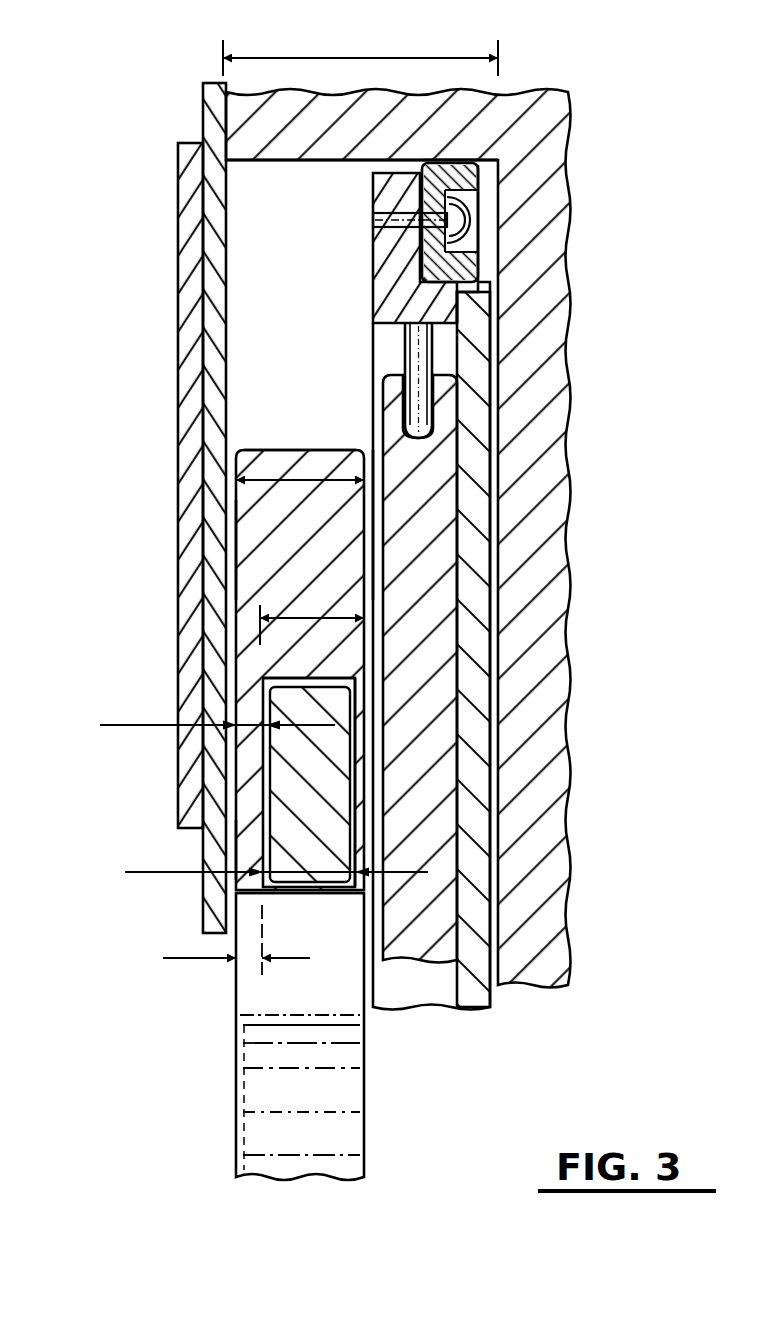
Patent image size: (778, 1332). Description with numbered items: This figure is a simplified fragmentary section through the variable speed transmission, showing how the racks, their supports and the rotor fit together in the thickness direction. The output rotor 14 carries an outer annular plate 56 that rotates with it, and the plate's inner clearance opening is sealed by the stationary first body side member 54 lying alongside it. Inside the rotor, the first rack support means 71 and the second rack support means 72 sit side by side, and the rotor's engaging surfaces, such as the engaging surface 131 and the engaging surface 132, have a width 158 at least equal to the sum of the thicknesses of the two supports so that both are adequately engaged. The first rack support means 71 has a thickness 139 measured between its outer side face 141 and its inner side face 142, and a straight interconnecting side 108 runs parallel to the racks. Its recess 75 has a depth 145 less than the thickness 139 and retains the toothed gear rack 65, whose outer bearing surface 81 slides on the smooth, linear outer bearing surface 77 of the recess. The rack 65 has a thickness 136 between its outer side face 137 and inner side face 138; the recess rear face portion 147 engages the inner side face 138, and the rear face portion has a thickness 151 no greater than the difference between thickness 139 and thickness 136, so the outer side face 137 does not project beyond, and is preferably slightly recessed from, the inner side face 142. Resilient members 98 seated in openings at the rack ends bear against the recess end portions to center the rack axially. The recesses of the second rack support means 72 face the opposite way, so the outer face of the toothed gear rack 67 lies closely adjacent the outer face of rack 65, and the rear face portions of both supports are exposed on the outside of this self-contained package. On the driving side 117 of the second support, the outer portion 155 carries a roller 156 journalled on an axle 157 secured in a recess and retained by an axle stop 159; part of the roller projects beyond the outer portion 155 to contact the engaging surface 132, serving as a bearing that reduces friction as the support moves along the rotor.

The output rotor 14 is at (558, 280).
The first body side member 54 is at (176, 183).
The outer annular plate 56 is at (200, 110).
The toothed gear rack 65 is at (340, 895).
The toothed gear rack 67 is at (424, 566).
The first rack support means 71 is at (262, 511).
The second rack support means 72 is at (467, 303).
The recess 75 is at (307, 894).
The outer bearing surface 77 is at (311, 688).
The outer bearing surface 81 is at (292, 674).
The resilient member 98 is at (406, 345).
The interconnecting side 108 is at (305, 447).
The driving side 117 is at (440, 145).
The engaging surface 131 is at (249, 294).
The engaging surface 132 is at (302, 166).
The thickness of rack 136 is at (153, 872).
The outer side face 137 is at (359, 812).
The inner side face 138 is at (261, 813).
The thickness of rack support means 139 is at (273, 478).
The outer side face 141 is at (232, 553).
The inner side face 142 is at (381, 518).
The depth of recess 145 is at (310, 615).
The recess rear face portion 147 is at (246, 848).
The thickness of rear face portion 151 is at (102, 725).
The outer portion 155 is at (369, 176).
The roller 156 is at (481, 175).
The axle 157 is at (394, 236).
The width of engaging surface 158 is at (336, 56).
The axle stop 159 is at (466, 213).